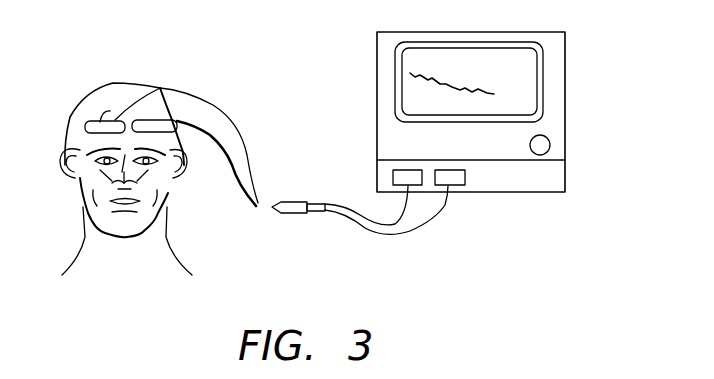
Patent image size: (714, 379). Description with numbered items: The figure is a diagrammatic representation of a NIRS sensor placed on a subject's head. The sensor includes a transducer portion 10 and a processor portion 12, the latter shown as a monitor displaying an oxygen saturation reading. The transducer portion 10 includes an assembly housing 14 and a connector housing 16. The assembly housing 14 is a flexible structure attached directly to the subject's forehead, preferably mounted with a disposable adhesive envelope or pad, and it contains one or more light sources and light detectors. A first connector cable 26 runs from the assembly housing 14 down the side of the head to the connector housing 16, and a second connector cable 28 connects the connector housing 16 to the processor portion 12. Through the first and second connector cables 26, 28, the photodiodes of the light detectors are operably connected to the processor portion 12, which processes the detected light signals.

The transducer portion 10 is at (182, 82).
The processor portion 12 is at (565, 32).
The assembly housing 14 is at (88, 121).
The connector housing 16 is at (290, 214).
The first connector cable 26 is at (225, 143).
The second connector cable 28 is at (425, 231).